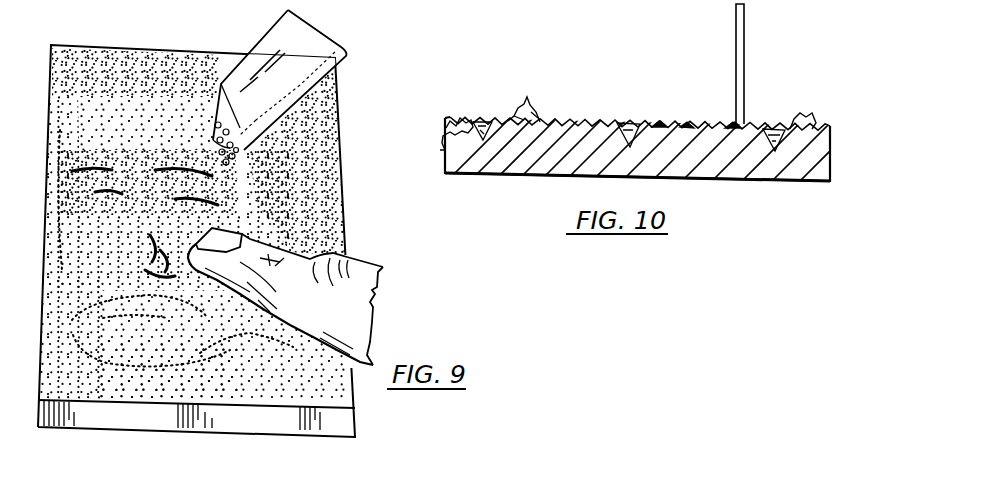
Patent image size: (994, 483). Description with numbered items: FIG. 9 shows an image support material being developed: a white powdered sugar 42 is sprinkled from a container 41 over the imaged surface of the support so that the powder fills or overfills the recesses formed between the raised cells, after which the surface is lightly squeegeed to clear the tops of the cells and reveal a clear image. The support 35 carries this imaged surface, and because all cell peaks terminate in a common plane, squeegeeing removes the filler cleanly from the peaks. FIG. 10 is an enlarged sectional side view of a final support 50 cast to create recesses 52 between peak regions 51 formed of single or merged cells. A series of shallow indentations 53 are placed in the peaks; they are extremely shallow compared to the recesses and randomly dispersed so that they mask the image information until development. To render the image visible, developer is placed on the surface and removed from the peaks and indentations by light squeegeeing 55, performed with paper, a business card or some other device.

In FIG. 9, the substrate sheet 35 is at (338, 100).
In FIG. 9, the container 41 is at (313, 32).
In FIG. 9, the white powdered sugar 42 is at (240, 193).
In FIG. 10, the white powdered sugar 42 is at (472, 168).
In FIG. 10, the final support 50 is at (740, 183).
In FIG. 10, the peak regions 51 is at (455, 116).
In FIG. 10, the recesses 52 is at (468, 124).
In FIG. 10, the shallow indentations 53 is at (527, 98).
In FIG. 10, the squeegeeing 55 is at (746, 36).